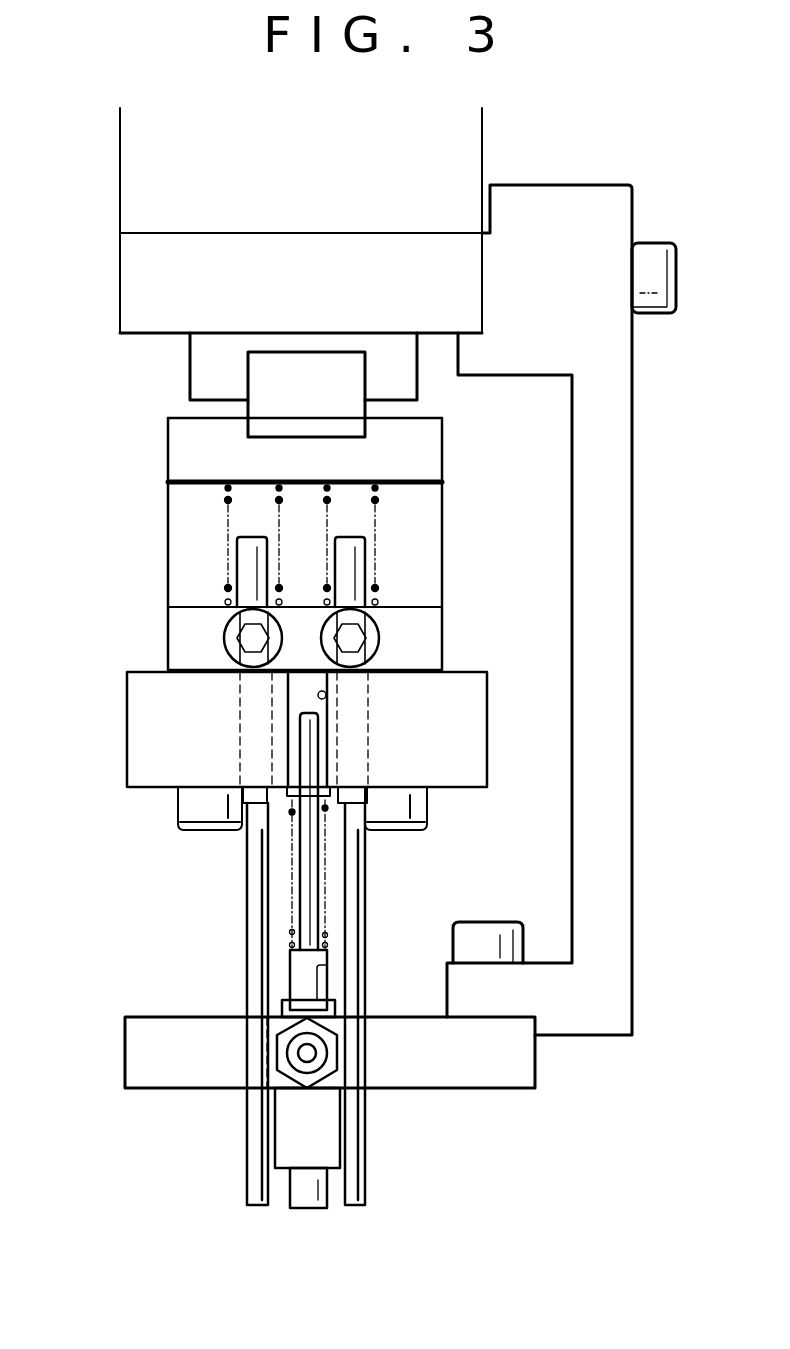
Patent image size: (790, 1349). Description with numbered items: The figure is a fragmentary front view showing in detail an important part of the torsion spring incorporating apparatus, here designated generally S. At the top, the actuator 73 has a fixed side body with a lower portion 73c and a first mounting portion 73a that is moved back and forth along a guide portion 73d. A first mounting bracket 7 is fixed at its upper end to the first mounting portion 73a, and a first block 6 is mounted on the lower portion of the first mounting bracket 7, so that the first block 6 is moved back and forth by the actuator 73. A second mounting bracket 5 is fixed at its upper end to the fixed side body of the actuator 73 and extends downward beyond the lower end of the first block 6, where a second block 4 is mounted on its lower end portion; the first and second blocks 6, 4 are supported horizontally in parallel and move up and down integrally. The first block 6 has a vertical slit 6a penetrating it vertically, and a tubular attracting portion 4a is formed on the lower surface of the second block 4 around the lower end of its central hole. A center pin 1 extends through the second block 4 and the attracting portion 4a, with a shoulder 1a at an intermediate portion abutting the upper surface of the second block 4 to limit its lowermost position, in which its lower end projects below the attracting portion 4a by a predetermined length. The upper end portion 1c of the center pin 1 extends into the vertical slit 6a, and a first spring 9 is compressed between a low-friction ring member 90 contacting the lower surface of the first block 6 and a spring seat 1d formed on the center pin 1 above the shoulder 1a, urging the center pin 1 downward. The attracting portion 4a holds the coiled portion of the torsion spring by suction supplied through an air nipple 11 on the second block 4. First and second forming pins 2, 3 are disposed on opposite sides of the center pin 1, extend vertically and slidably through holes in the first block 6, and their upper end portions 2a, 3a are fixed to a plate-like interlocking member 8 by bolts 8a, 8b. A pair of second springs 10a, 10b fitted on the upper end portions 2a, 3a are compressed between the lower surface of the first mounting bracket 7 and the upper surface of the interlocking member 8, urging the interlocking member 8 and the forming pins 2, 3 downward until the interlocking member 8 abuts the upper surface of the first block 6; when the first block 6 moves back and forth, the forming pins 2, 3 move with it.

The press / punching apparatus S is at (47, 492).
The actuator 73 is at (138, 155).
The slide lower portion 73c is at (145, 282).
The guide portion 73d is at (190, 362).
The first mounting portion 73a is at (270, 378).
The second mounting bracket 5 is at (612, 494).
The first mounting bracket 7 is at (420, 440).
The interlocking member 8 is at (178, 657).
The bolt 8a is at (238, 630).
The bolt 8b is at (378, 632).
The second spring 10a is at (226, 500).
The second spring 10b is at (378, 500).
The upper end portion of the first forming pin 2a is at (247, 565).
The upper end portion of the second forming pin 3a is at (352, 563).
The first block 6 is at (140, 738).
The vertical slit 6a is at (326, 697).
The upper end portion of the center pin 1c is at (303, 715).
The ring member 90 is at (292, 797).
The first spring 9 is at (328, 935).
The spring seat 1d is at (322, 958).
The shoulder 1a is at (332, 1003).
The second block 4 is at (145, 1050).
The air nipple 11 is at (335, 1050).
The attracting portion 4a is at (325, 1120).
The first forming pin 2 is at (250, 1166).
The second forming pin 3 is at (358, 1192).
The center pin 1 is at (305, 1200).